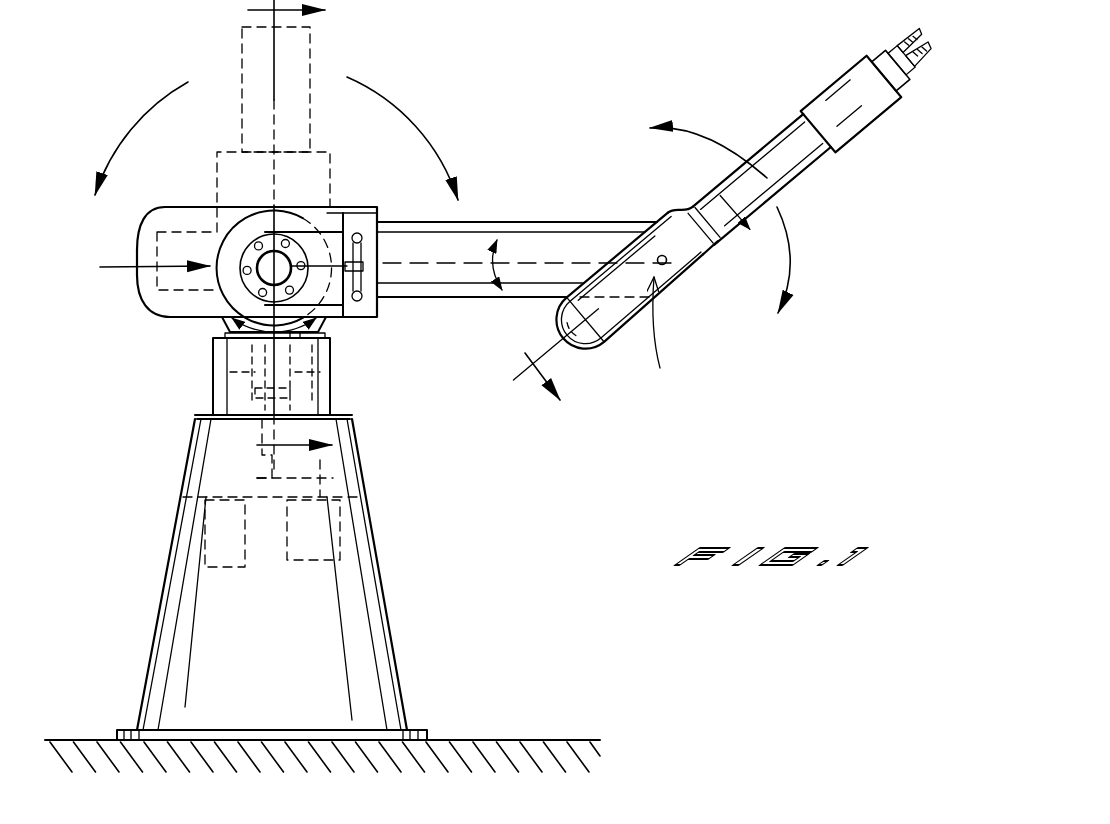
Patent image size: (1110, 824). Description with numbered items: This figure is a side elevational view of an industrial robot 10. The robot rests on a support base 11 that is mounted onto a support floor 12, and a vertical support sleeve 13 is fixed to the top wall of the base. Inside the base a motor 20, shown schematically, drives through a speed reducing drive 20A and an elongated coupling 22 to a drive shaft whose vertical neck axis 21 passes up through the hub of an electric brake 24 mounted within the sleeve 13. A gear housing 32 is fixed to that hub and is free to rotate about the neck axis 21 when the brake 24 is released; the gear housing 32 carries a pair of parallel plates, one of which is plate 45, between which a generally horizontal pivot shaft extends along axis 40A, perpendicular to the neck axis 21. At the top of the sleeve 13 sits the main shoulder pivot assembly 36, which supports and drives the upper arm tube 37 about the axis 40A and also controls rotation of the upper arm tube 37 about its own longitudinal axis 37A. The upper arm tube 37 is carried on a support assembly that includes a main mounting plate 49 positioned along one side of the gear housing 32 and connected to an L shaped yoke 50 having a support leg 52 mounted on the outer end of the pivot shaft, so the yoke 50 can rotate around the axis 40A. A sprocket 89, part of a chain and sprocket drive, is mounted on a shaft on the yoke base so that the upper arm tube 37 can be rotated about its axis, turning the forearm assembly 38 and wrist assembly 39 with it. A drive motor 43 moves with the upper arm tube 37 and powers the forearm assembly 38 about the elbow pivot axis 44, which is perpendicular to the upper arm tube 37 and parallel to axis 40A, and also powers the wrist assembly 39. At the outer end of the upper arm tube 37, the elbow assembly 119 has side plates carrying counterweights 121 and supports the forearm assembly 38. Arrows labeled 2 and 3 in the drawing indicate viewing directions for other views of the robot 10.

The direction arrow 2 is at (265, 230).
The direction arrow 3 is at (630, 264).
The industrial robot 10 is at (433, 351).
The support base 11 is at (387, 676).
The support floor 12 is at (520, 740).
The support sleeve 13 is at (330, 401).
The motor 20 is at (235, 568).
The speed reducing drive 20A is at (312, 561).
The neck axis 21 is at (250, 333).
The elongated coupling 22 is at (270, 465).
The electric brake 24 is at (232, 365).
The gear housing 32 is at (135, 271).
The main shoulder pivot assembly 36 is at (211, 199).
The upper arm tube 37 is at (315, 40).
The longitudinal axis of upper arm tube 37A is at (507, 262).
The forearm assembly 38 is at (793, 203).
The wrist assembly 39 is at (840, 97).
The pivot shaft axis 40A is at (271, 271).
The drive motor 43 is at (160, 236).
The elbow pivot axis 44 is at (667, 264).
The plate 45 is at (282, 222).
The main mounting plate 49 is at (352, 226).
The L shaped yoke 50 is at (347, 306).
The support leg 52 is at (311, 241).
The sprocket 89 is at (380, 283).
The elbow assembly 119 is at (662, 337).
The counterweights 121 is at (590, 357).